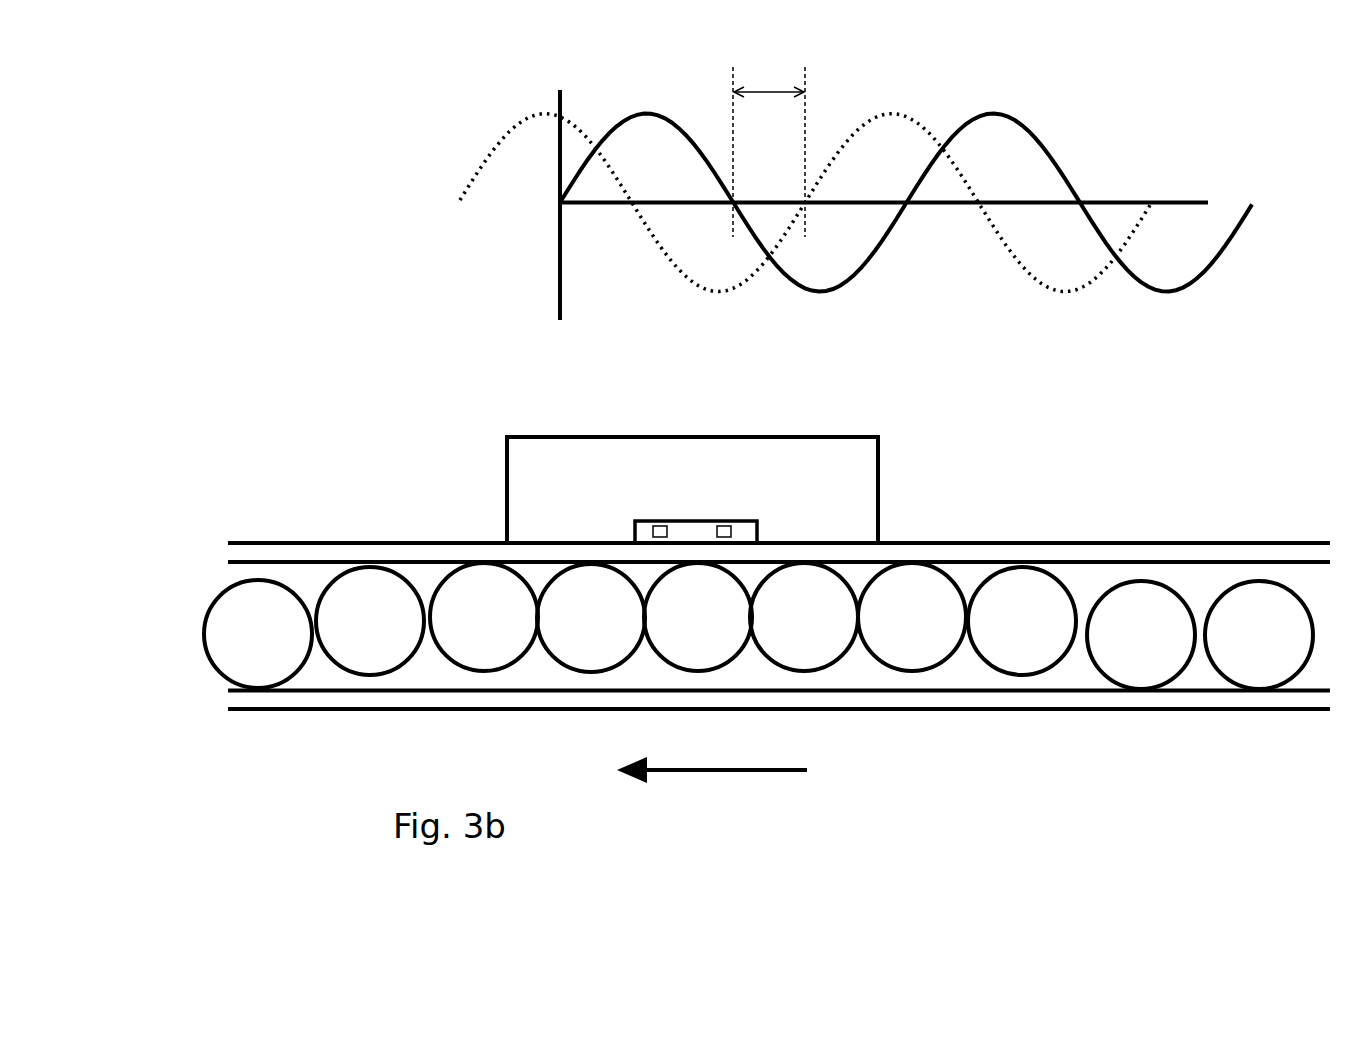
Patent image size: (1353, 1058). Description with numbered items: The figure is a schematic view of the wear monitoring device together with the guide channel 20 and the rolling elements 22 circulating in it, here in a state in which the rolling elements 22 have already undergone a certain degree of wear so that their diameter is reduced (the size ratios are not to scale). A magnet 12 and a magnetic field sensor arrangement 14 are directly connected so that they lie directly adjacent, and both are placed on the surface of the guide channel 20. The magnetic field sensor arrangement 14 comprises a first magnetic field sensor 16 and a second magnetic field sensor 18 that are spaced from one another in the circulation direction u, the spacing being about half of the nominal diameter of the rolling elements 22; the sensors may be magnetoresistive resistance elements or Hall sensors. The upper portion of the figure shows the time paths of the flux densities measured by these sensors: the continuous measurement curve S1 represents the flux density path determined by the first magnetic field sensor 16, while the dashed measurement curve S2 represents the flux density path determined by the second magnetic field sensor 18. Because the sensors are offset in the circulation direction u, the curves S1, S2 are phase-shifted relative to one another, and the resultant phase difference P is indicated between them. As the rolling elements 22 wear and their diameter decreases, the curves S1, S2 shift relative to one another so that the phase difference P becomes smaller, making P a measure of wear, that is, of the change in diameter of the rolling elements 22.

The magnet 12 is at (583, 452).
The magnetic field sensor arrangement 14 is at (645, 527).
The first magnetic field sensor 16 is at (663, 525).
The second magnetic field sensor 18 is at (731, 525).
The guide channel 20 is at (1230, 700).
The rolling elements 22 is at (1052, 610).
The phase difference P is at (768, 90).
The measurement curve S1 is at (922, 203).
The measurement curve S2 is at (814, 203).
The circulation direction u is at (778, 772).